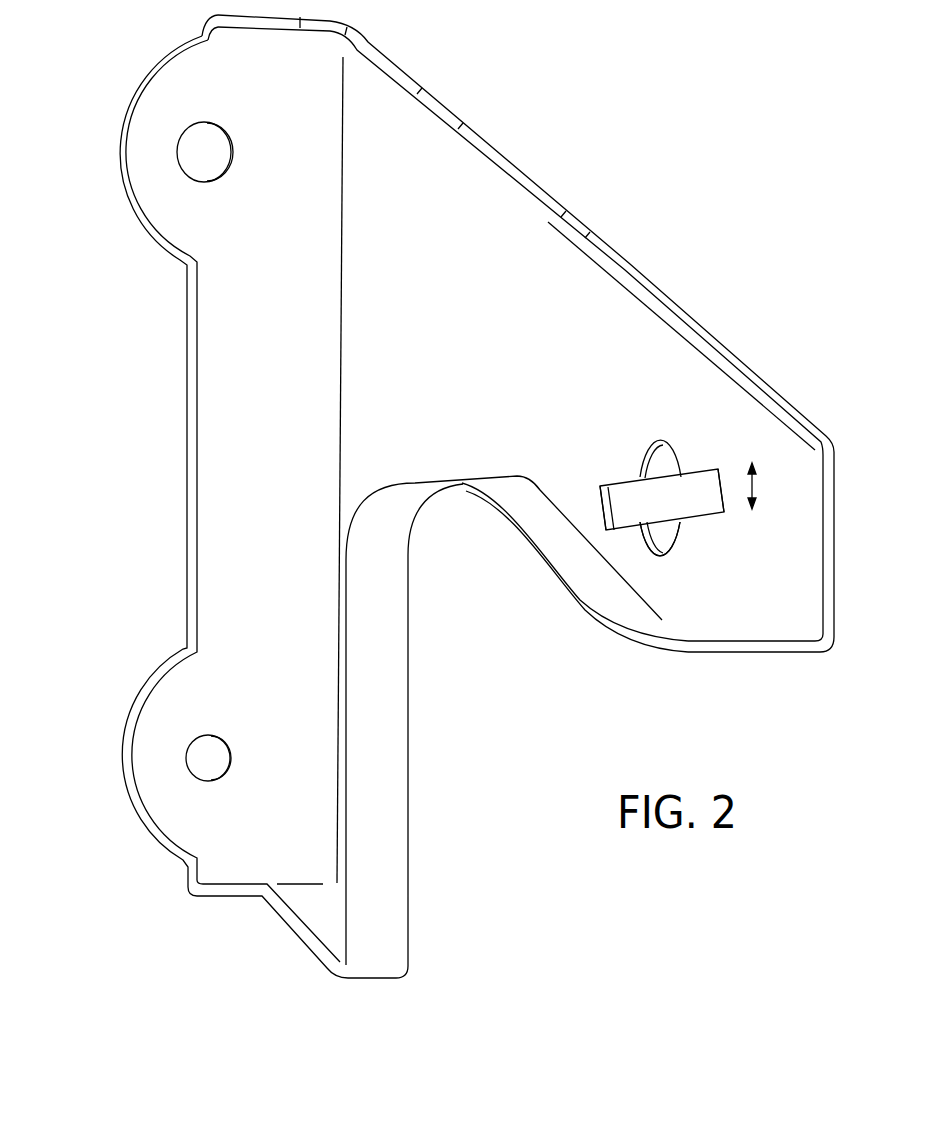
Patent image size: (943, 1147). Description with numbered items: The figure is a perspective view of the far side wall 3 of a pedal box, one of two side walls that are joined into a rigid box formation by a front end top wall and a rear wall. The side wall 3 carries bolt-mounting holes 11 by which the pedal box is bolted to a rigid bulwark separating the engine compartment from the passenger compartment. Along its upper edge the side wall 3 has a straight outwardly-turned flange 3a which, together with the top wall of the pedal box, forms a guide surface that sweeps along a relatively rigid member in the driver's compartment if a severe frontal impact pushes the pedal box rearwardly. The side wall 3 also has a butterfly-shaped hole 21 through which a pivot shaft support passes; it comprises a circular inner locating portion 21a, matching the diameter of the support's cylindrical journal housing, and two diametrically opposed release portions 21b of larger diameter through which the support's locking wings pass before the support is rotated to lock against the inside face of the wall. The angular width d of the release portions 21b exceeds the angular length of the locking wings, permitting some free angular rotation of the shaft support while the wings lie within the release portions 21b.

The side wall 3 is at (498, 190).
The outwardly-turned flange 3a is at (697, 328).
The bolt-mounting holes 11 is at (192, 153).
The hole 21 is at (683, 460).
The locating portion 21a is at (640, 535).
The release portions 21b is at (606, 507).
The angular width d is at (766, 486).